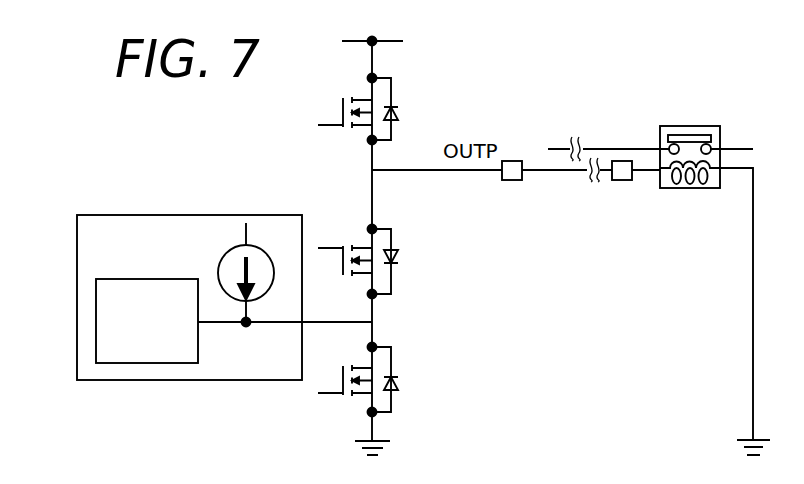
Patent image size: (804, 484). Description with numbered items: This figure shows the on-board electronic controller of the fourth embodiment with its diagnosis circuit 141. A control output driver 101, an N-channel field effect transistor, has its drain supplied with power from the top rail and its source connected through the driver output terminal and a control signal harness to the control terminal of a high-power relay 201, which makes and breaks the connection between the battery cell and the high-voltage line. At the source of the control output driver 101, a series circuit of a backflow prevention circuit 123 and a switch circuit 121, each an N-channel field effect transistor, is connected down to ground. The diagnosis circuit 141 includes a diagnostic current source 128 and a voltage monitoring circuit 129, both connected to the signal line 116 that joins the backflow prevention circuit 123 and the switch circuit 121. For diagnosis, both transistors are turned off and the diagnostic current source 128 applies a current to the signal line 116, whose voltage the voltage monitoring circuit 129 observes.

The control output driver 101 is at (393, 101).
The backflow prevention circuit 123 is at (400, 283).
The signal line 116 is at (372, 335).
The switch circuit 121 is at (400, 407).
The diagnosis circuit 141 is at (130, 215).
The voltage monitoring circuit 129 is at (96, 310).
The diagnostic current source 128 is at (230, 245).
The high-power relay 201 is at (693, 126).